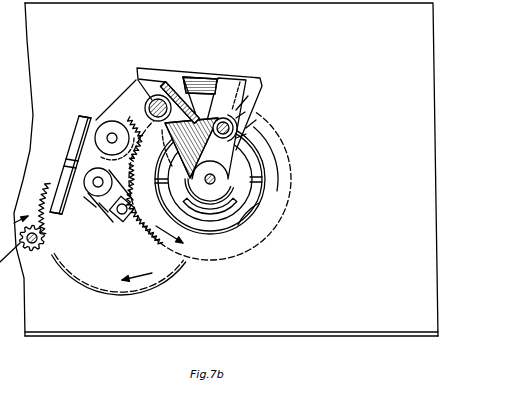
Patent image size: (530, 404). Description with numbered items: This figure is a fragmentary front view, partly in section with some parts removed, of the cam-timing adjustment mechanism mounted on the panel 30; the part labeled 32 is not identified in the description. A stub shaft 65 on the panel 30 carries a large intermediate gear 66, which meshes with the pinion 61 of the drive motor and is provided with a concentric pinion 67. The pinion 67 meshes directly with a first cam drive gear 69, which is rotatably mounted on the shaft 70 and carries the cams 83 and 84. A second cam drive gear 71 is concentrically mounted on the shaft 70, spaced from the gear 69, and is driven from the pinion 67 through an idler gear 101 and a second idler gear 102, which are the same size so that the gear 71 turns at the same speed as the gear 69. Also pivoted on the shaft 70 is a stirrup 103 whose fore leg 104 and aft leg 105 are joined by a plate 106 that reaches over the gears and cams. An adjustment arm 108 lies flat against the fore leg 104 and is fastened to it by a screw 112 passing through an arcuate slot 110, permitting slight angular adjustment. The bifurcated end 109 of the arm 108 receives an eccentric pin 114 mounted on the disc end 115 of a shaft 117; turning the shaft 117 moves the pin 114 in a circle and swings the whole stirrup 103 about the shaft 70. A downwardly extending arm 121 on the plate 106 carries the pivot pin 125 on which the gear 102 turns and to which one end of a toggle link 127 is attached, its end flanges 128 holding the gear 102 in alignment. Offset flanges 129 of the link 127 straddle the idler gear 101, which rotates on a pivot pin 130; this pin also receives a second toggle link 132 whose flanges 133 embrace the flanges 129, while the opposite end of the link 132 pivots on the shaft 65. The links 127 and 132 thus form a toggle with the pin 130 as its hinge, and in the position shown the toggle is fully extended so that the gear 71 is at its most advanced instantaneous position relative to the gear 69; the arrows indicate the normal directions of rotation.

The panel 30 is at (428, 88).
The base plate 32 is at (403, 330).
The pinion of the drive motor 61 is at (26, 249).
The stub shaft 65 is at (116, 222).
The large intermediate gear 66 is at (147, 284).
The concentric pinion 67 is at (123, 220).
The first cam drive gear 69 is at (257, 179).
The shaft 70 is at (216, 182).
The cam drive gear 71 is at (282, 140).
The cam 83 is at (252, 229).
The cam 84 is at (221, 214).
The idler gear 101 is at (78, 193).
The second idler gear 102 is at (104, 120).
The stirrup 103 is at (258, 72).
The fore leg 104 is at (231, 121).
The aft leg 105 is at (214, 80).
The plate 106 is at (207, 76).
The adjustment arm 108 is at (170, 130).
The bifurcated end 109 is at (170, 86).
The arcuate slot 110 is at (246, 128).
The screw 112 is at (236, 110).
The eccentric pin 114 is at (161, 96).
The disc end 115 is at (136, 80).
The shaft 117 is at (152, 96).
The downwardly extending arm 121 is at (110, 134).
The pivot pin 125 is at (80, 117).
The toggle link 127 is at (76, 127).
The end flanges 128 is at (93, 143).
The flanges 129 is at (77, 167).
The pivot pin 130 is at (93, 181).
The toggle link 132 is at (84, 197).
The flanges 133 is at (99, 203).